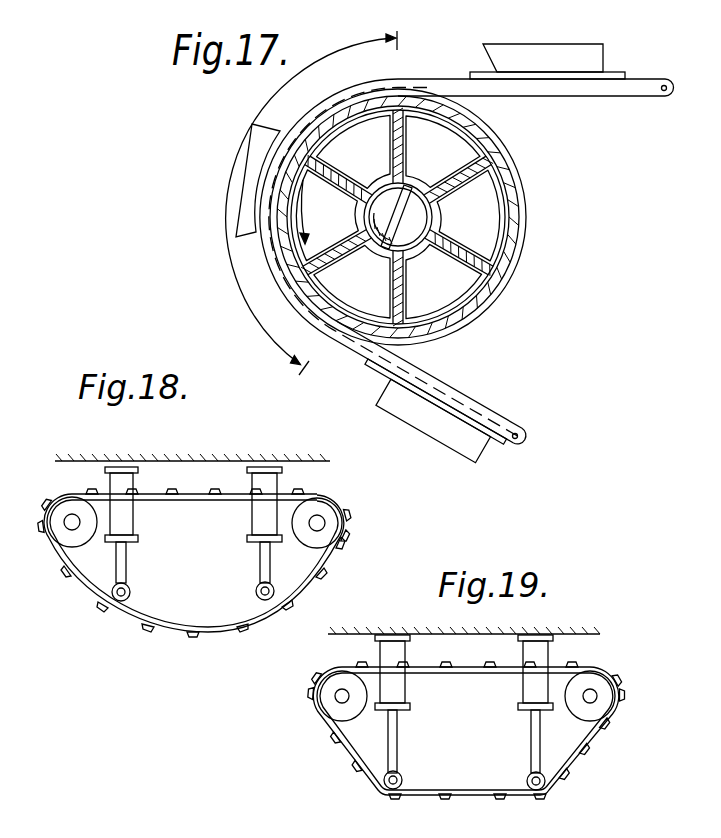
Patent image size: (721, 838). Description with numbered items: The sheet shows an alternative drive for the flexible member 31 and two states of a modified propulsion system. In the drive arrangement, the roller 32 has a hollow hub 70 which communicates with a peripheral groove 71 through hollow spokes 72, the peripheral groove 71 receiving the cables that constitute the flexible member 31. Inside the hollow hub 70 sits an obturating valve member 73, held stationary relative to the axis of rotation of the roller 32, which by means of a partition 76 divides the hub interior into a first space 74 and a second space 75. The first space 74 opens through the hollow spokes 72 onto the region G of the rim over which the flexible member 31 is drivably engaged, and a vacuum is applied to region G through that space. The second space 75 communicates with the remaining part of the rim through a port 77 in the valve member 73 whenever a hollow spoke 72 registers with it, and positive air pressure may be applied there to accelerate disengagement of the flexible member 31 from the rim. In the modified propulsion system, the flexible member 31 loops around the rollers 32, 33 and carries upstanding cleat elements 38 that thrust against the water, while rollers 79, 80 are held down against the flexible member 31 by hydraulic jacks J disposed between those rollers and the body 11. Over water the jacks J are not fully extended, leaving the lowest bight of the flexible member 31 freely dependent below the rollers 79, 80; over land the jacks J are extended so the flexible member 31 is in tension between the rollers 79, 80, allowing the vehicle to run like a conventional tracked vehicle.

In FIG. 18, the body 11 is at (165, 438).
In FIG. 19, the body 11 is at (412, 632).
In FIG. 17, the flexible member 31 is at (633, 96).
In FIG. 17, the roller 32 is at (515, 150).
In FIG. 18, the roller 32 is at (77, 540).
In FIG. 19, the roller 32 is at (326, 697).
In FIG. 18, the roller 33 is at (332, 527).
In FIG. 19, the roller 33 is at (592, 686).
In FIG. 17, the cleat elements 38 is at (565, 50).
In FIG. 18, the cleat elements 38 is at (245, 625).
In FIG. 19, the cleat elements 38 is at (484, 798).
In FIG. 17, the hollow hub 70 is at (379, 191).
In FIG. 17, the peripheral groove 71 is at (517, 258).
In FIG. 17, the hollow spokes 72 is at (418, 325).
In FIG. 17, the obturating valve member 73 is at (407, 214).
In FIG. 17, the first space 74 is at (376, 213).
In FIG. 17, the second space 75 is at (421, 201).
In FIG. 17, the partition 76 is at (321, 263).
In FIG. 17, the port 77 is at (389, 253).
In FIG. 18, the roller 79 is at (128, 590).
In FIG. 19, the roller 79 is at (404, 778).
In FIG. 18, the roller 80 is at (257, 592).
In FIG. 19, the roller 80 is at (530, 781).
In FIG. 17, the region of the rim G is at (292, 203).
In FIG. 18, the hydraulic jacks J is at (125, 532).
In FIG. 19, the hydraulic jacks J is at (405, 697).